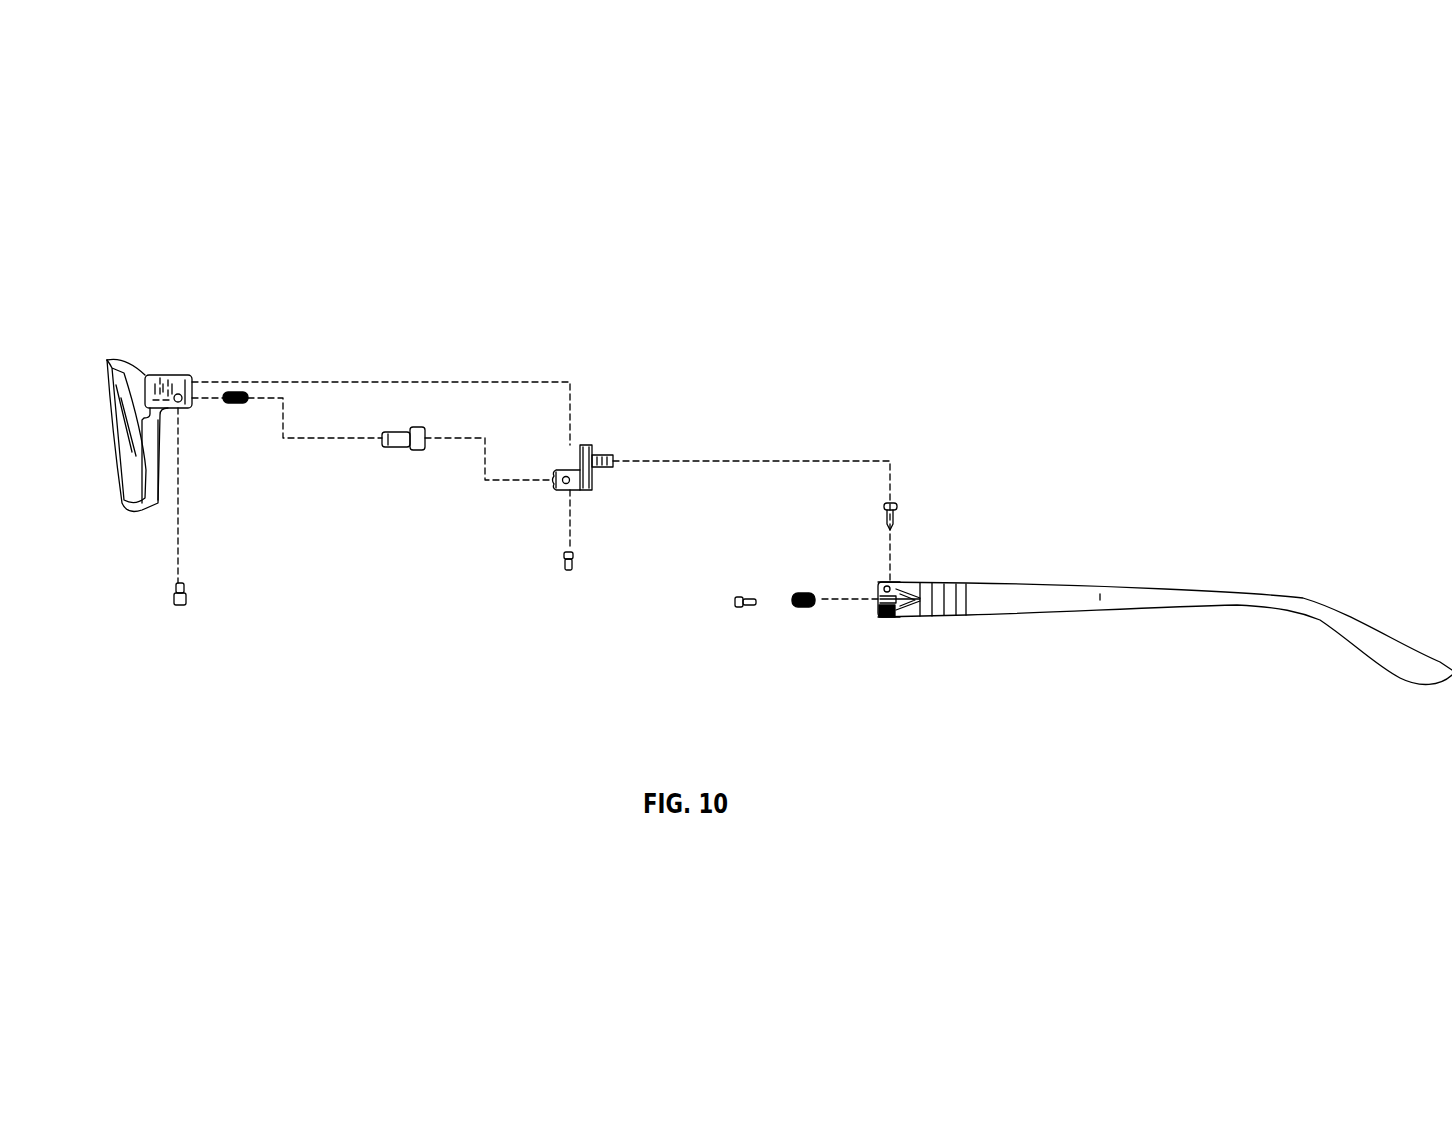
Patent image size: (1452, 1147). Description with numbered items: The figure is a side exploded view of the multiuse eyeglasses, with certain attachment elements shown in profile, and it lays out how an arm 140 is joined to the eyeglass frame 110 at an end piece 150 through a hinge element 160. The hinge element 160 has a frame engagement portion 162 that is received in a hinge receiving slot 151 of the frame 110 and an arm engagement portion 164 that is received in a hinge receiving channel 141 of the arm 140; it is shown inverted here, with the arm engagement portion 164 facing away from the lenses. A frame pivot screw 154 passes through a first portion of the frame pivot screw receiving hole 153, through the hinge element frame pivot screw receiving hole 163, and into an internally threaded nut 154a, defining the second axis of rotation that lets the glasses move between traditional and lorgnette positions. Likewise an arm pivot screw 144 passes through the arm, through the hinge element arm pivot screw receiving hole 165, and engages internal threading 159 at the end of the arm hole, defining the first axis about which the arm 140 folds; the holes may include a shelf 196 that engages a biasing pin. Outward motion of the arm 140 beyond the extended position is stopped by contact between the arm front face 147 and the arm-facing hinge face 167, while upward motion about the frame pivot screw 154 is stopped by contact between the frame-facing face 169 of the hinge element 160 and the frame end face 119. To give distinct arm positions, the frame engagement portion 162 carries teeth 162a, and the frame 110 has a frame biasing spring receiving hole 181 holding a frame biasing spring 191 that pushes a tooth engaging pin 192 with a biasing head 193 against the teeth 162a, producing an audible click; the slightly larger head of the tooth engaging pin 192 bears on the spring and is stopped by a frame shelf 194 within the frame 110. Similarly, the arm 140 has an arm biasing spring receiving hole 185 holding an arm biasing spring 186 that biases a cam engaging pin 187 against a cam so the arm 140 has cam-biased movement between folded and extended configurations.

The eyeglass frame 110 is at (132, 363).
The frame end face 119 is at (410, 320).
The arm 140 is at (1117, 598).
The hinge receiving channel 141 is at (878, 598).
The arm pivot screw 144 is at (890, 500).
The arm front face 147 is at (870, 622).
The end piece 150 is at (155, 387).
The hinge receiving slot 151 is at (193, 393).
The frame pivot screw receiving hole 153 is at (182, 413).
The frame pivot screw 154 is at (569, 572).
The internally threaded nut 154a is at (173, 597).
The internal threading 159 is at (890, 617).
The hinge element 160 is at (593, 457).
The frame engagement portion 162 is at (570, 440).
The teeth 162a is at (553, 484).
The hinge element frame pivot screw receiving hole 163 is at (565, 490).
The arm engagement portion 164 is at (617, 457).
The hinge element arm pivot screw receiving hole 165 is at (603, 457).
The arm-facing hinge face 167 is at (636, 493).
The frame-facing face 169 is at (549, 348).
The frame biasing spring receiving hole 181 is at (167, 393).
The arm biasing spring receiving hole 185 is at (905, 600).
The arm biasing spring 186 is at (810, 608).
The cam engaging pin 187 is at (735, 600).
The frame biasing spring 191 is at (237, 403).
The tooth engaging pin 192 is at (398, 447).
The biasing head 193 is at (425, 437).
The frame shelf 194 is at (180, 390).
The shelf 196 is at (925, 585).